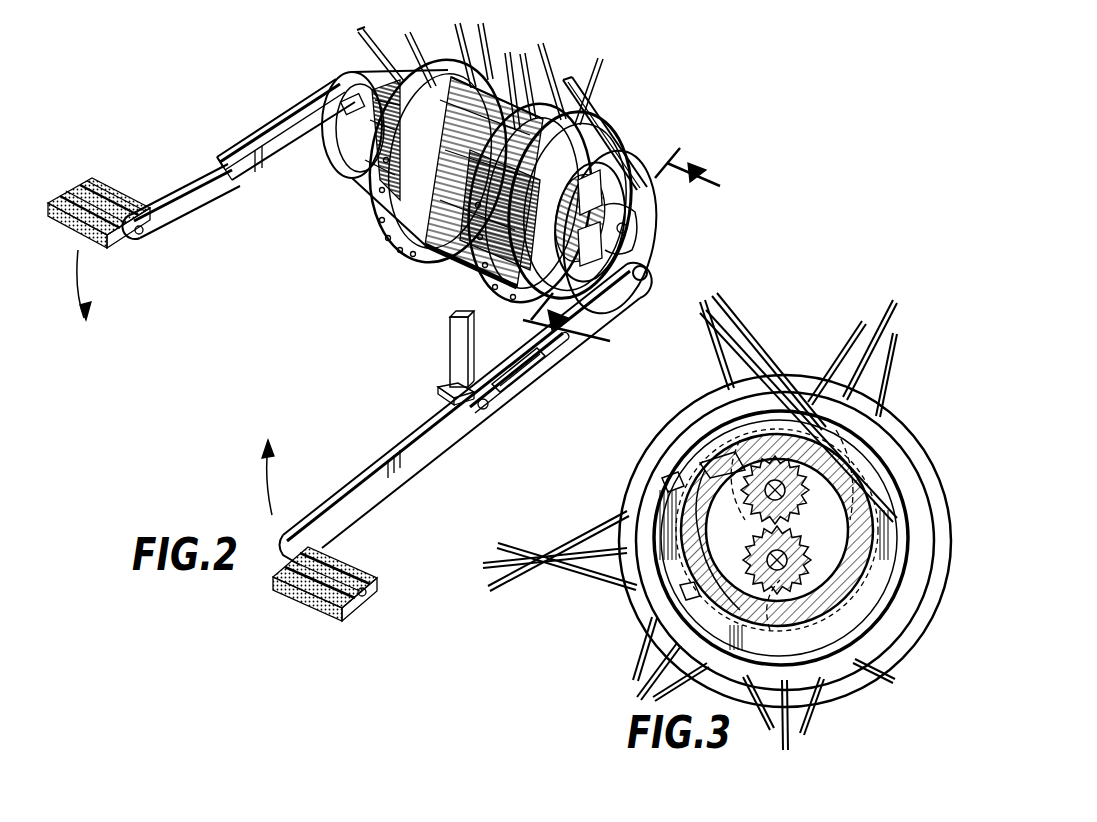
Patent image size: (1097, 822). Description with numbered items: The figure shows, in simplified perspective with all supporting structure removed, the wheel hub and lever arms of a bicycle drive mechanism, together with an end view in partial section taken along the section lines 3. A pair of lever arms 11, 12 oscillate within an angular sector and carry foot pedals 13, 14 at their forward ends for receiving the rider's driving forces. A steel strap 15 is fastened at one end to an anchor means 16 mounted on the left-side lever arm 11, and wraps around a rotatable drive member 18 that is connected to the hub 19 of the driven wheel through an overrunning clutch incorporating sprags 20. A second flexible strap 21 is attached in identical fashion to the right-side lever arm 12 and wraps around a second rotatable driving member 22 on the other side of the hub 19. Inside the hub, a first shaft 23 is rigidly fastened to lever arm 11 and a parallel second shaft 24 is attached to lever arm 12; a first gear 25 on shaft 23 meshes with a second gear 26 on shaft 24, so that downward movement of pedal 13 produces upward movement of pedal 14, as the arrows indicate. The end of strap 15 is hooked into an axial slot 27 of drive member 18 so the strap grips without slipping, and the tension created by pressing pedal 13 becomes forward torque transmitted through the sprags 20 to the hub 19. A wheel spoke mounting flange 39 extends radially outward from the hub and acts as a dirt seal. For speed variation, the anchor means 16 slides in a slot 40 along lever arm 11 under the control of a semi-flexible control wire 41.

In FIG. 2, the lever arm 11 is at (415, 468).
In FIG. 2, the lever arm 12 is at (178, 182).
In FIG. 2, the foot pedal 13 is at (322, 614).
In FIG. 2, the foot pedal 14 is at (118, 192).
In FIG. 2, the steel strap 15 is at (586, 113).
In FIG. 3, the steel strap 15 is at (738, 350).
In FIG. 2, the anchor means 16 is at (445, 392).
In FIG. 2, the drive member 18 is at (652, 205).
In FIG. 3, the drive member 18 is at (700, 463).
In FIG. 2, the hub 19 is at (455, 248).
In FIG. 3, the hub 19 is at (876, 430).
In FIG. 2, the sprags 20 is at (540, 258).
In FIG. 3, the sprags 20 is at (666, 482).
In FIG. 2, the flexible strap 21 is at (362, 36).
In FIG. 2, the rotatable driving member 22 is at (322, 148).
In FIG. 2, the first shaft 23 is at (647, 280).
In FIG. 3, the first shaft 23 is at (777, 530).
In FIG. 2, the second rotatable shaft 24 is at (628, 228).
In FIG. 3, the second rotatable shaft 24 is at (786, 494).
In FIG. 3, the first gear 25 is at (767, 557).
In FIG. 3, the second gear 26 is at (802, 520).
In FIG. 3, the axial slot 27 is at (742, 443).
In FIG. 2, the wheel spoke mounting flange 39 is at (522, 300).
In FIG. 3, the wheel spoke mounting flange 39 is at (912, 440).
In FIG. 2, the slot 40 is at (560, 346).
In FIG. 2, the semi-flexible control wire 41 is at (528, 374).
In FIG. 2, the section lines 3 is at (633, 258).